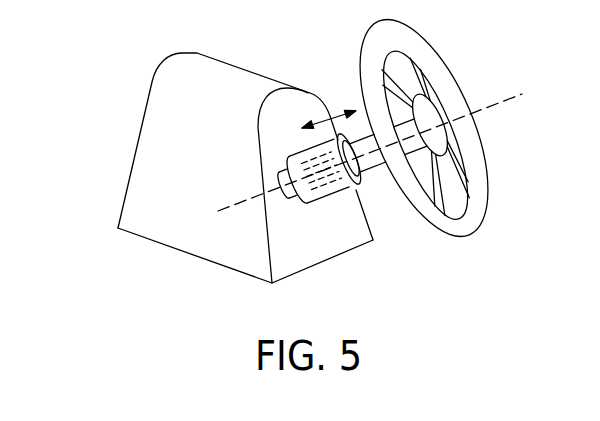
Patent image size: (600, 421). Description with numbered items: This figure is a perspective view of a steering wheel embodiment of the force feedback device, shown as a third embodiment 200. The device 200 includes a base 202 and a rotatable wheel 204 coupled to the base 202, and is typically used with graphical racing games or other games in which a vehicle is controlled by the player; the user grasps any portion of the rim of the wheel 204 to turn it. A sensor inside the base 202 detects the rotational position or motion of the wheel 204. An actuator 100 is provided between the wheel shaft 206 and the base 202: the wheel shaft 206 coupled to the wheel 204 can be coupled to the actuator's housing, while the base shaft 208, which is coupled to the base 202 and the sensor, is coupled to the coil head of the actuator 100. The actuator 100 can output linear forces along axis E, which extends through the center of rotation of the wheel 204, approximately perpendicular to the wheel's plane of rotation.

The third embodiment of force feedback device 200 is at (101, 87).
The base 202 is at (162, 210).
The actuator 100 is at (332, 203).
The base shaft 208 is at (283, 168).
The wheel shaft 206 is at (368, 165).
The rotatable wheel 204 is at (428, 55).